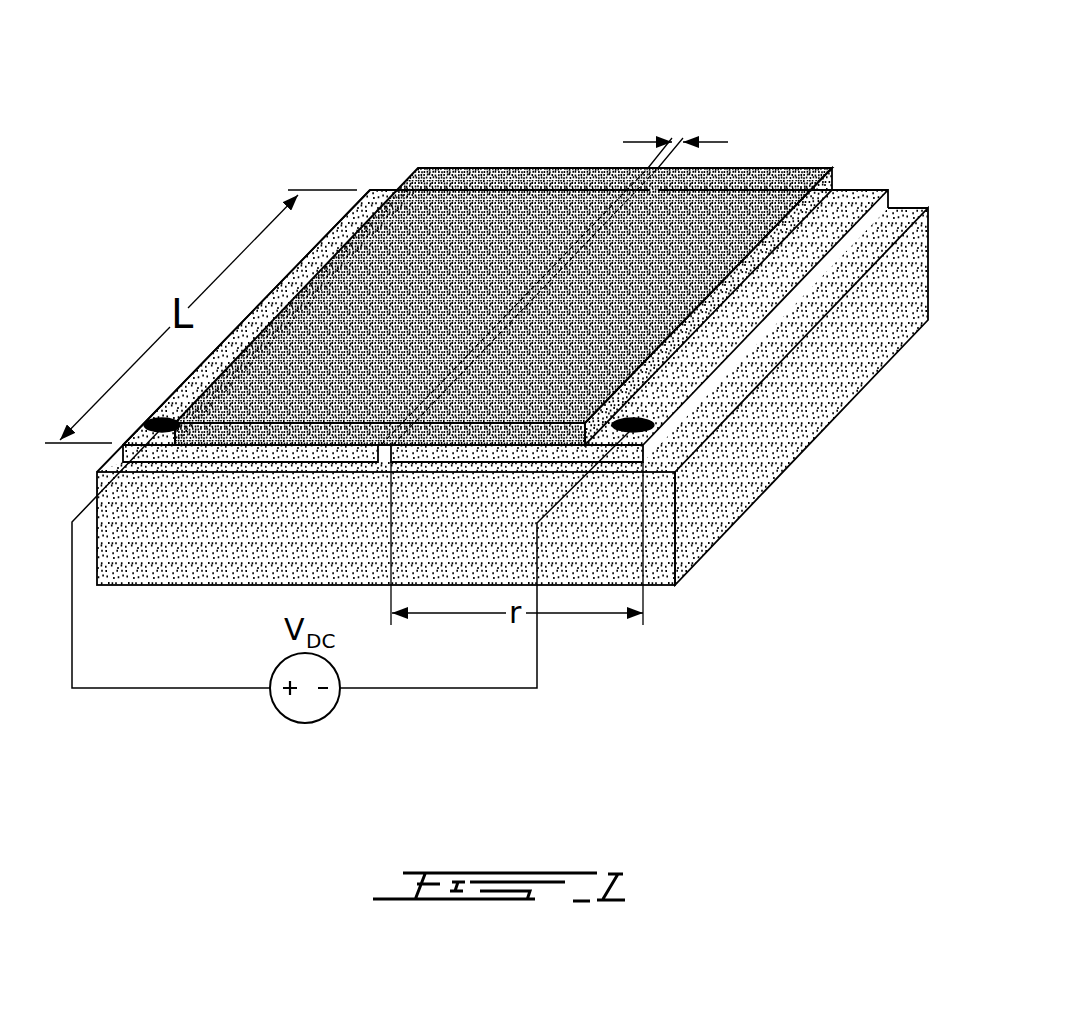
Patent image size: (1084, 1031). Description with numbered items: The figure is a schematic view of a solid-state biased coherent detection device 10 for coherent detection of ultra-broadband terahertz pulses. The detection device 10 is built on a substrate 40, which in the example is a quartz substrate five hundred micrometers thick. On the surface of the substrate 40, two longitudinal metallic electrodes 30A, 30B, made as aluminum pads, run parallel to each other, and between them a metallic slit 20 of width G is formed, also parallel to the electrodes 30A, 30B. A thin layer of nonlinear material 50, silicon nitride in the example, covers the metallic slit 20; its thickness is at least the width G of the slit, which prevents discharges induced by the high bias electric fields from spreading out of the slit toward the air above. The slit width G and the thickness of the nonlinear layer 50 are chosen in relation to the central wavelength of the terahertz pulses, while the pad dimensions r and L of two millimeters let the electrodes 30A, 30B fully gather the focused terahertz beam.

The detection device 10 is at (527, 425).
The metallic slit 20 is at (543, 275).
The longitudinal metallic electrode 30A is at (330, 227).
The longitudinal metallic electrode 30B is at (858, 192).
The substrate 40 is at (794, 400).
The nonlinear material layer 50 is at (273, 350).